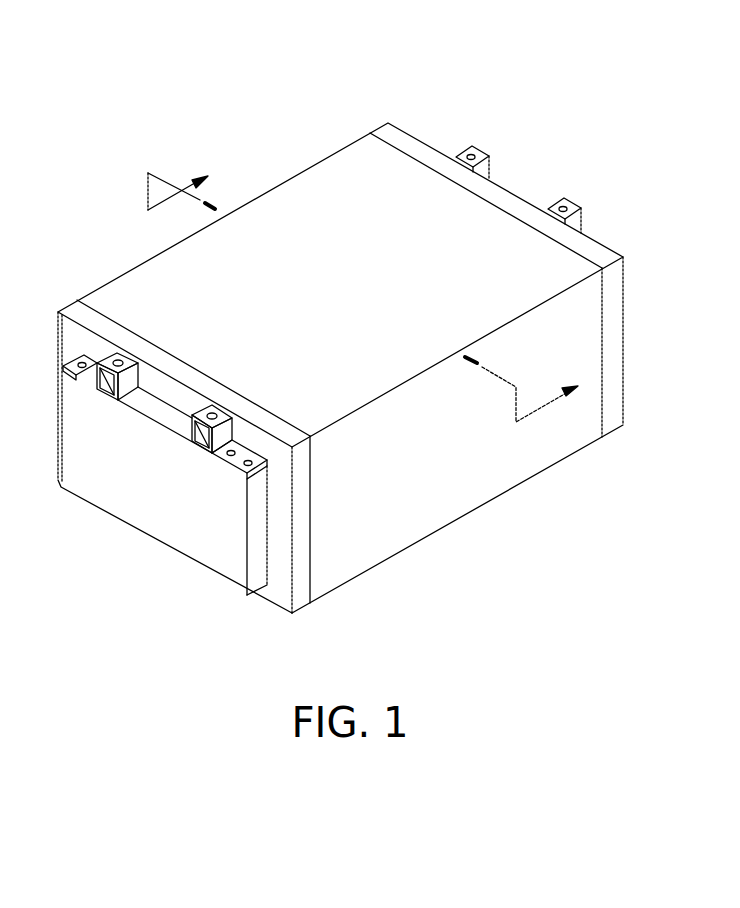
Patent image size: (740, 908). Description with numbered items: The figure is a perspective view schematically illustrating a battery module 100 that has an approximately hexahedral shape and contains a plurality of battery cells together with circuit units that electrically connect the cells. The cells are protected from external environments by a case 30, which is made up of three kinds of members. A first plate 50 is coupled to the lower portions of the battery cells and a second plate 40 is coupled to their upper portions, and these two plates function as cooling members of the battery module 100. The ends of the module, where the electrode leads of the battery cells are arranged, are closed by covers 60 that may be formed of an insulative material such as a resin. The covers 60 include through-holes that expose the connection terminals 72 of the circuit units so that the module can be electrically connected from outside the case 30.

The battery module 100 is at (268, 64).
The case 30 is at (636, 557).
The second plate 40 is at (412, 355).
The first plate 50 is at (460, 477).
The covers 60 is at (612, 420).
The connection terminals 72 is at (223, 462).